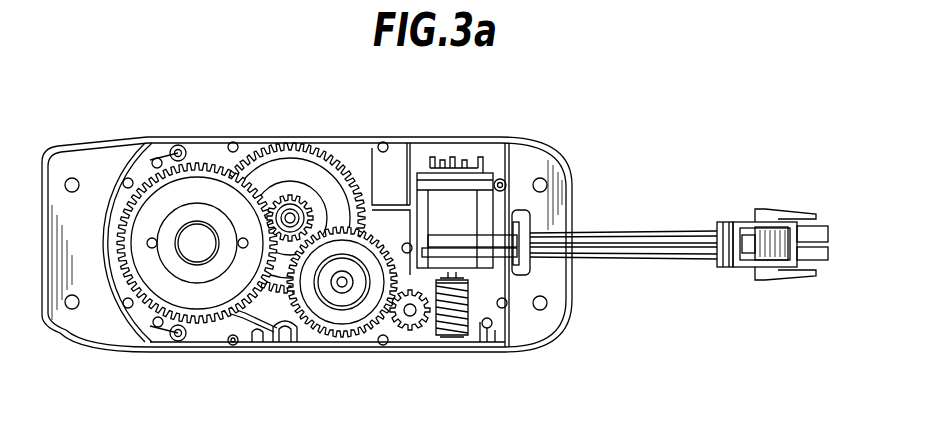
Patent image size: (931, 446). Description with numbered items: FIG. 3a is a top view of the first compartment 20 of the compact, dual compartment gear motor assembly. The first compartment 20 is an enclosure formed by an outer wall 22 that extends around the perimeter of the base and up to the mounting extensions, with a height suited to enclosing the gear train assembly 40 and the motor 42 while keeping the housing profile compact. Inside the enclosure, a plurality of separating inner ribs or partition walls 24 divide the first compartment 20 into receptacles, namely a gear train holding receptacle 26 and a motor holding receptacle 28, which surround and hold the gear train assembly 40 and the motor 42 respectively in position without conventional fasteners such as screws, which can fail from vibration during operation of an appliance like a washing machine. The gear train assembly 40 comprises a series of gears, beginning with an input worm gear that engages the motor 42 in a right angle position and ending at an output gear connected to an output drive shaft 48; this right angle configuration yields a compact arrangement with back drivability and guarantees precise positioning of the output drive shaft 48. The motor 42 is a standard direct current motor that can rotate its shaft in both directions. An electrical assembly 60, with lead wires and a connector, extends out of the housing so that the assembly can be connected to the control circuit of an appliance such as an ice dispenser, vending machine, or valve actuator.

The first compartment 20 is at (268, 116).
The outer wall 22 is at (293, 133).
The inner ribs or partition walls 24 is at (200, 153).
The gear train holding receptacle 26 is at (249, 152).
The motor holding receptacle 28 is at (453, 153).
The gear train assembly 40 is at (338, 159).
The motor 42 is at (453, 218).
The output drive shaft 48 is at (467, 336).
The electrical assembly 60 is at (779, 192).